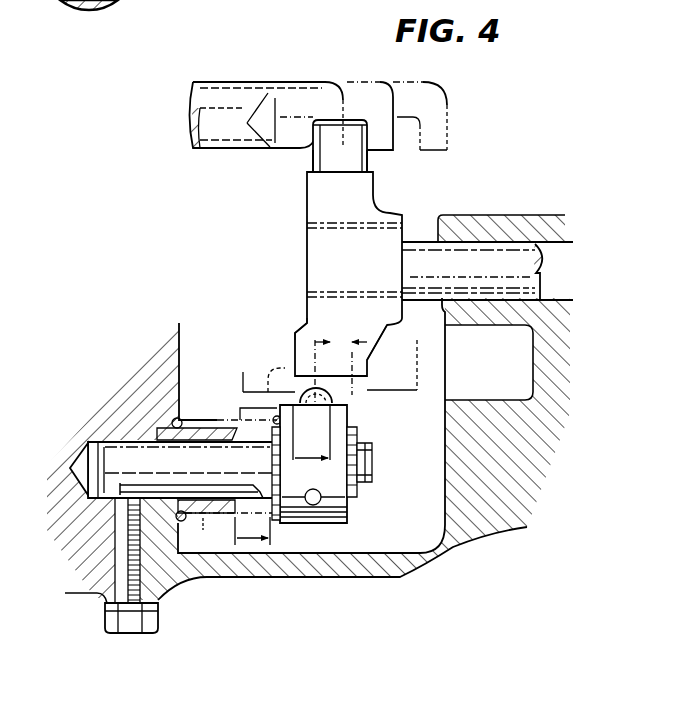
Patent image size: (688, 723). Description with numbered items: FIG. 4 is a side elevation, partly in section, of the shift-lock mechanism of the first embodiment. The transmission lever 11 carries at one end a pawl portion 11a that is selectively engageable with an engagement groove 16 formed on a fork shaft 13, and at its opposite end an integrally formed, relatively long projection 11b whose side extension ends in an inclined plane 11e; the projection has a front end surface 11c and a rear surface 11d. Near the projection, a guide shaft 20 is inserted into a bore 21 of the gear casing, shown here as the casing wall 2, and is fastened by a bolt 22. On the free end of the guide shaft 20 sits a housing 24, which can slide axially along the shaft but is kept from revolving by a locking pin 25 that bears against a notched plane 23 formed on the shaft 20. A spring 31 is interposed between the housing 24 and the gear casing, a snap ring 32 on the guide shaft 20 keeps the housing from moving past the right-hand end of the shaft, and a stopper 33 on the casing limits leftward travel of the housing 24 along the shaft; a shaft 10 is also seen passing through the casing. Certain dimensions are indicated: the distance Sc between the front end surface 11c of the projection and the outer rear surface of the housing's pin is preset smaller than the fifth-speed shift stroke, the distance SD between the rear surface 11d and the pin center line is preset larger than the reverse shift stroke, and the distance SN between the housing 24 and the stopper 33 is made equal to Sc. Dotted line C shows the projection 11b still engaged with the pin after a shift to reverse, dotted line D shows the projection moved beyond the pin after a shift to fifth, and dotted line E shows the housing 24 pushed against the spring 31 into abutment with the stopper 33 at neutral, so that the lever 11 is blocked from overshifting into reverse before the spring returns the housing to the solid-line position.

The housing 2 is at (460, 548).
The shaft 10 is at (476, 247).
The transmission lever 11 is at (307, 245).
The pawl portion 11a is at (360, 165).
The projection 11b is at (302, 318).
The front end surface of projection 11c is at (298, 335).
The rear surface of projection 11d is at (369, 358).
The inclined plane 11e is at (362, 392).
The fork shaft 13 is at (262, 90).
The engagement groove 16 is at (349, 118).
The guide shaft 20 is at (125, 440).
The bore 21 is at (78, 452).
The bolt 22 is at (108, 618).
The notched plane 23 is at (368, 483).
The housing 24 is at (350, 515).
The locking pin 25 is at (313, 505).
The spring 31 is at (233, 408).
The snap ring 32 is at (358, 433).
The stopper 33 is at (203, 515).
The dotted line C is at (243, 376).
The dotted line D is at (417, 370).
The dotted line E is at (277, 370).
The distance SD is at (341, 386).
The distance Sc is at (311, 446).
The distance SN is at (248, 545).